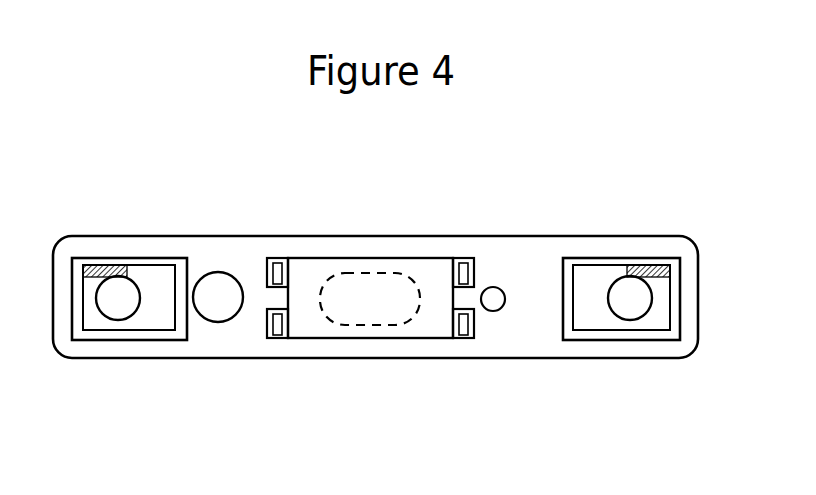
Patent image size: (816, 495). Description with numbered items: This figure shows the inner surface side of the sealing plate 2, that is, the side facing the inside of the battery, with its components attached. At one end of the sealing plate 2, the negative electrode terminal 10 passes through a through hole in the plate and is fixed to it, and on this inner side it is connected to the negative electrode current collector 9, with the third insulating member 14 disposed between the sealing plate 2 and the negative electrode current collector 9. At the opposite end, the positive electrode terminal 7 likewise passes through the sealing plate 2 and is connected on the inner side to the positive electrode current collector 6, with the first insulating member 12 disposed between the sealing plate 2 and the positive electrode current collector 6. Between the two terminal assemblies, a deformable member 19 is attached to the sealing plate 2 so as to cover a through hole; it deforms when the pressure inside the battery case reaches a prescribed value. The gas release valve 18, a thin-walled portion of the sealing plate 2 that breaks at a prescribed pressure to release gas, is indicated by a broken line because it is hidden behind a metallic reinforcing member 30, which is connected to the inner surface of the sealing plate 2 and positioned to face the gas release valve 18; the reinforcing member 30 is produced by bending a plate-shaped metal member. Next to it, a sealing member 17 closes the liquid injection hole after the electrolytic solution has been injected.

The sealing plate 2 is at (510, 258).
The third insulating member 14 is at (137, 262).
The negative electrode current collector 9 is at (163, 302).
The negative electrode terminal 10 is at (118, 302).
The deformable member 19 is at (217, 292).
The reinforcing member 30 is at (310, 278).
The gas release valve 18 is at (380, 308).
The sealing member 17 is at (496, 305).
The first insulating member 12 is at (570, 258).
The positive electrode current collector 6 is at (585, 305).
The positive electrode terminal 7 is at (630, 300).